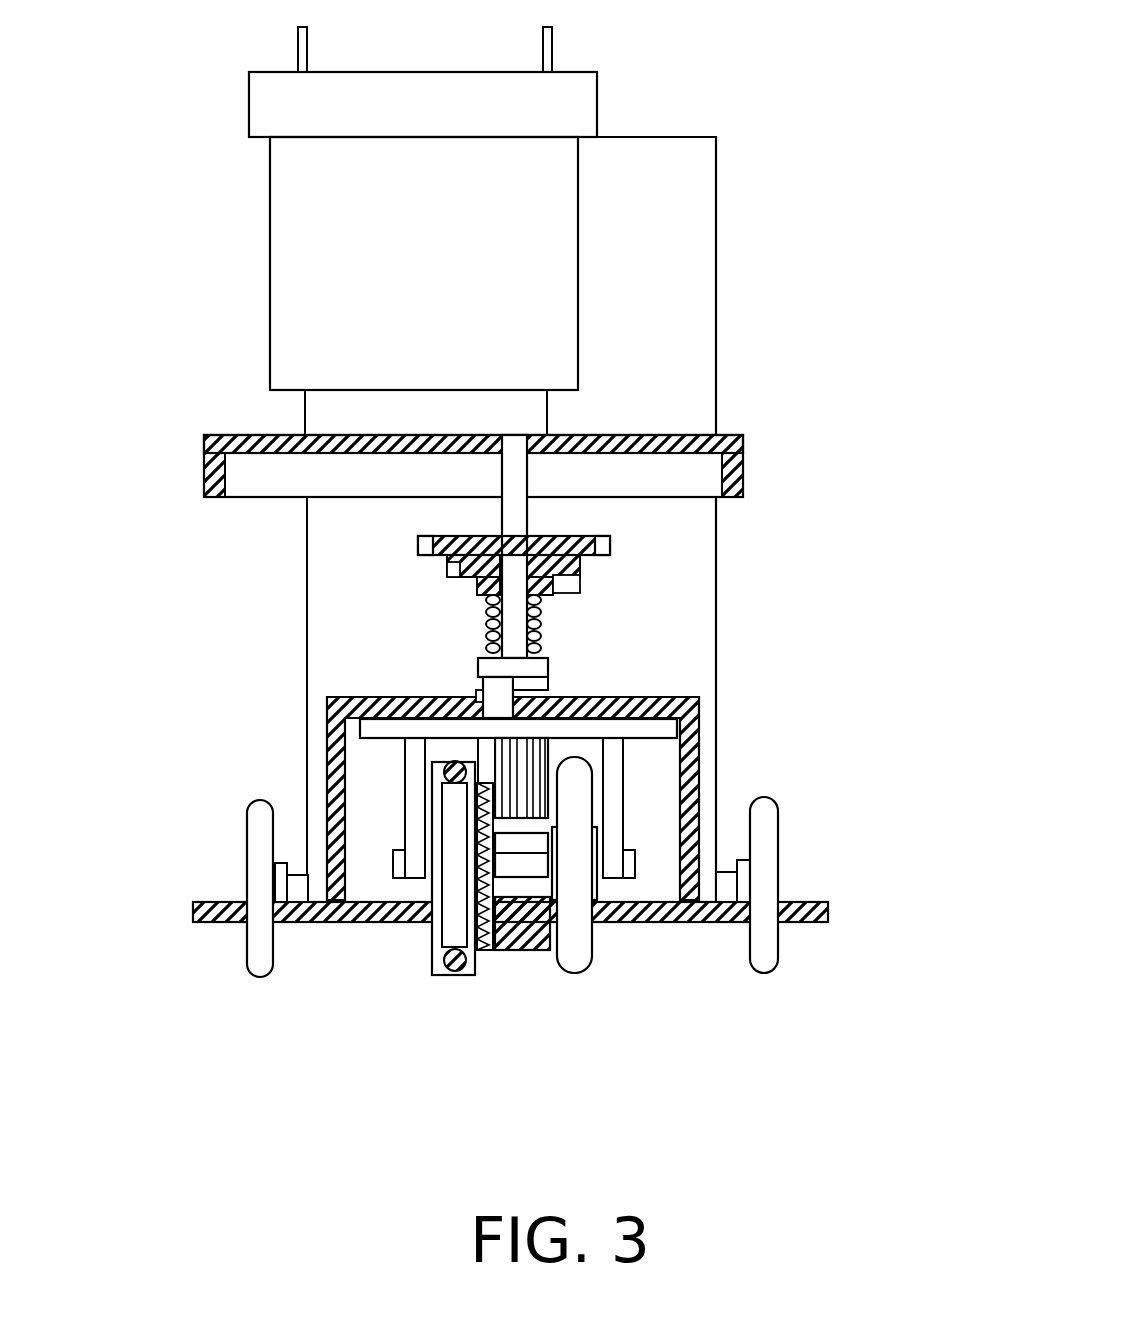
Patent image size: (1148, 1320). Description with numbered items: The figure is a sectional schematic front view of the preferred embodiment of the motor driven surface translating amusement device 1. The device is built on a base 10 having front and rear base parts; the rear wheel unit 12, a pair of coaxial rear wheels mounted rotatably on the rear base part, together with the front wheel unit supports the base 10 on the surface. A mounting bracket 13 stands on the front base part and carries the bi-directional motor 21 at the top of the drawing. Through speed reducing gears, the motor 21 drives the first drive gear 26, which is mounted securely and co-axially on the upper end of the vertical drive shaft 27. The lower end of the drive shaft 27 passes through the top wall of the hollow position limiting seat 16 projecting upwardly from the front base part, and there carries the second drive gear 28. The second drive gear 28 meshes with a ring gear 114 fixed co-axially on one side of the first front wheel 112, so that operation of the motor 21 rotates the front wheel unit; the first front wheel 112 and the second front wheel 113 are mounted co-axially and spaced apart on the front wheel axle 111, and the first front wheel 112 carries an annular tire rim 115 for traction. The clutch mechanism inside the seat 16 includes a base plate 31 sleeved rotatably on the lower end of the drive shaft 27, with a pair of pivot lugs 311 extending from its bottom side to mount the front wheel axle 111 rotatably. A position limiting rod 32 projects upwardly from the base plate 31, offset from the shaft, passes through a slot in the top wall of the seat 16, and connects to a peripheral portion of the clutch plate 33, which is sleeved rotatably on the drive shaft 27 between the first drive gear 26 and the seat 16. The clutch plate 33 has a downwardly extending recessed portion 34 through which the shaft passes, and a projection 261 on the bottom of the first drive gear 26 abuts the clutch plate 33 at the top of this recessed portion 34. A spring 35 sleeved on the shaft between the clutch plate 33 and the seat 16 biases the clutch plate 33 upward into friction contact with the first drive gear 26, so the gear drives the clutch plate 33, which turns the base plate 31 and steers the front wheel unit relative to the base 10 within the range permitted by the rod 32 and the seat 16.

The motor driven surface translating amusement device 1 is at (724, 120).
The base 10 is at (222, 915).
The rear wheel unit 12 is at (763, 943).
The mounting bracket 13 is at (618, 441).
The position limiting seat 16 is at (336, 748).
The bi-directional motor 21 is at (312, 268).
The first drive gear 26 is at (557, 537).
The projection 261 is at (582, 566).
The vertical drive shaft 27 is at (500, 637).
The second drive gear 28 is at (510, 770).
The base plate 31 is at (655, 735).
The pivot lugs 311 is at (408, 805).
The position limiting rod 32 is at (503, 687).
The clutch plate 33 is at (556, 583).
The recessed portion 34 is at (545, 607).
The spring 35 is at (545, 628).
The front wheel axle 111 is at (522, 868).
The first front wheel 112 is at (435, 939).
The second front wheel 113 is at (573, 953).
The ring gear 114 is at (484, 950).
The annular tire rim 115 is at (453, 968).